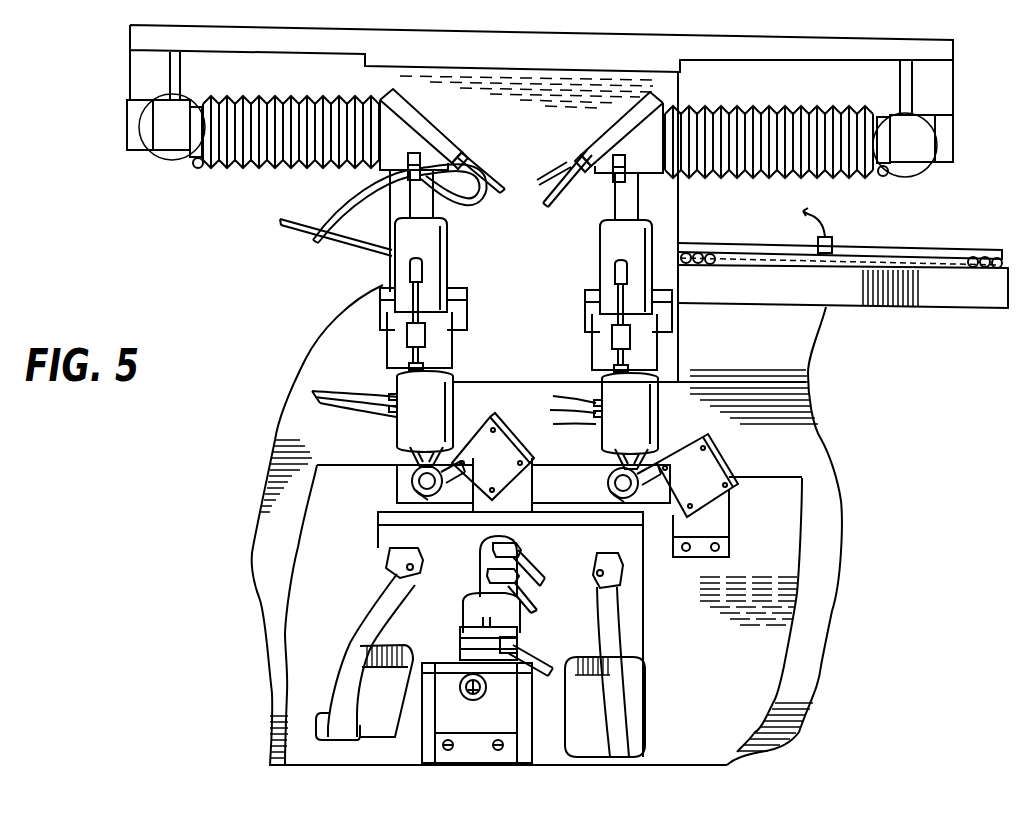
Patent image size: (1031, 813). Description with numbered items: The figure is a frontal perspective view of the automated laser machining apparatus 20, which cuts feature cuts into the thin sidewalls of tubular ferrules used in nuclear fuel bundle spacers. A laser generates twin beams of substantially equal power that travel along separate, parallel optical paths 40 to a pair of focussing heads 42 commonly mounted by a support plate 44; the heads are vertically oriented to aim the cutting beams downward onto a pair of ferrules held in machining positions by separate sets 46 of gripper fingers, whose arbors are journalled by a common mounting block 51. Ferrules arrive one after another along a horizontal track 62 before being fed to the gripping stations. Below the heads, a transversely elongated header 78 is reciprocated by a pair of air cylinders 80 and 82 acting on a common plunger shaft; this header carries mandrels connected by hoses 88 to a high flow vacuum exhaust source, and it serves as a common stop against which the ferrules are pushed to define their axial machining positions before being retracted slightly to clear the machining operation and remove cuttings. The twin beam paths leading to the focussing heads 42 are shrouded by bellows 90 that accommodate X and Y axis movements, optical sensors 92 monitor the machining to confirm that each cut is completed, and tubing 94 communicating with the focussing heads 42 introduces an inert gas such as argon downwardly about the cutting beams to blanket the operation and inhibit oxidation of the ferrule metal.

The machining apparatus 20 is at (207, 560).
The optical paths 40 is at (175, 156).
The focussing heads 42 is at (442, 354).
The support plate 44 is at (539, 309).
The gripper finger sets 46 is at (400, 487).
The mounting block 51 is at (540, 445).
The horizontal track 62 is at (943, 288).
The header 78 is at (441, 565).
The air cylinder 80 is at (470, 567).
The air cylinder 82 is at (462, 652).
The hoses 88 is at (345, 645).
The bellows 90 is at (301, 101).
The optical sensors 92 is at (500, 452).
The tubing 94 is at (547, 183).